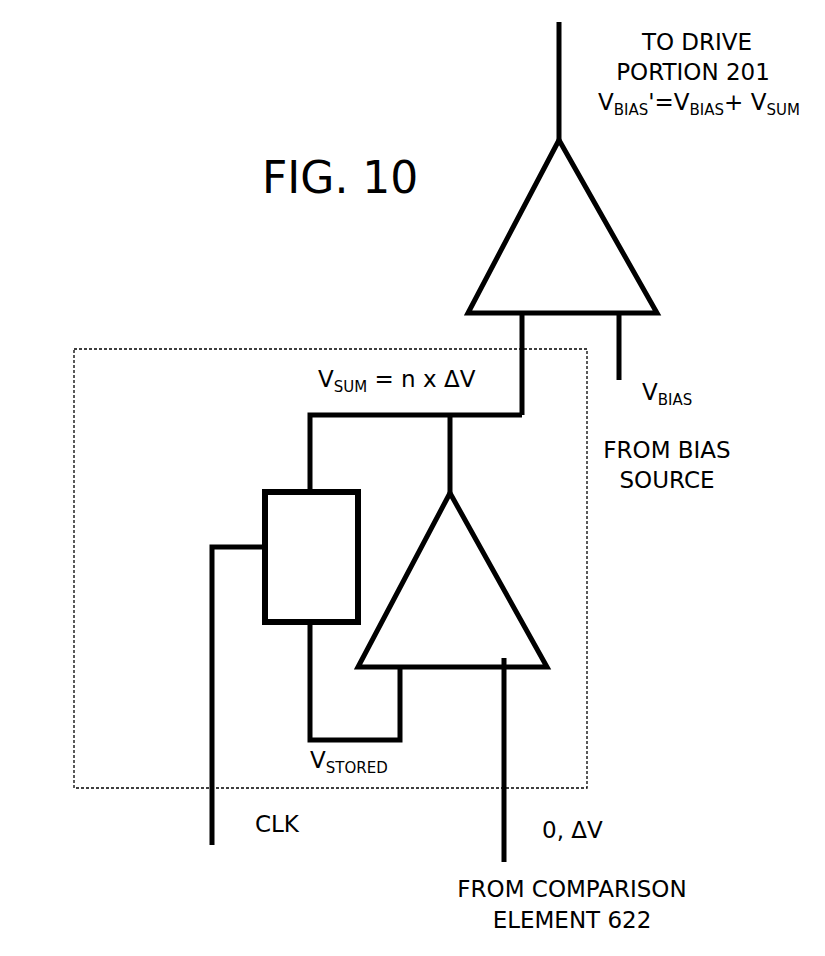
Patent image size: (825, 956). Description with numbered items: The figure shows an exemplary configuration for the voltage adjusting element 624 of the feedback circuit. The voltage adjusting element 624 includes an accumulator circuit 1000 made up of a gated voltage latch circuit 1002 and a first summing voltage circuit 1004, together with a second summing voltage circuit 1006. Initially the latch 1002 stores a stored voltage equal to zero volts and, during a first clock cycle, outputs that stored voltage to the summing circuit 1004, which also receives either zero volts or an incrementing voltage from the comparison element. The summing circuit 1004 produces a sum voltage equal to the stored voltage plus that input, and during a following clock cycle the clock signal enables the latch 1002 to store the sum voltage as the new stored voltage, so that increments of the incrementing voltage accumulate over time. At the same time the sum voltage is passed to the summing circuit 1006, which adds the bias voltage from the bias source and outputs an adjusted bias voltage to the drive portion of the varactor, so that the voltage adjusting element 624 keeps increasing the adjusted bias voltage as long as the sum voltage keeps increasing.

The voltage adjusting element 624 is at (381, 257).
The accumulator circuit 1000 is at (590, 696).
The gated voltage latch circuit 1002 is at (262, 507).
The first summing voltage circuit 1004 is at (502, 597).
The second summing voltage circuit 1006 is at (593, 194).